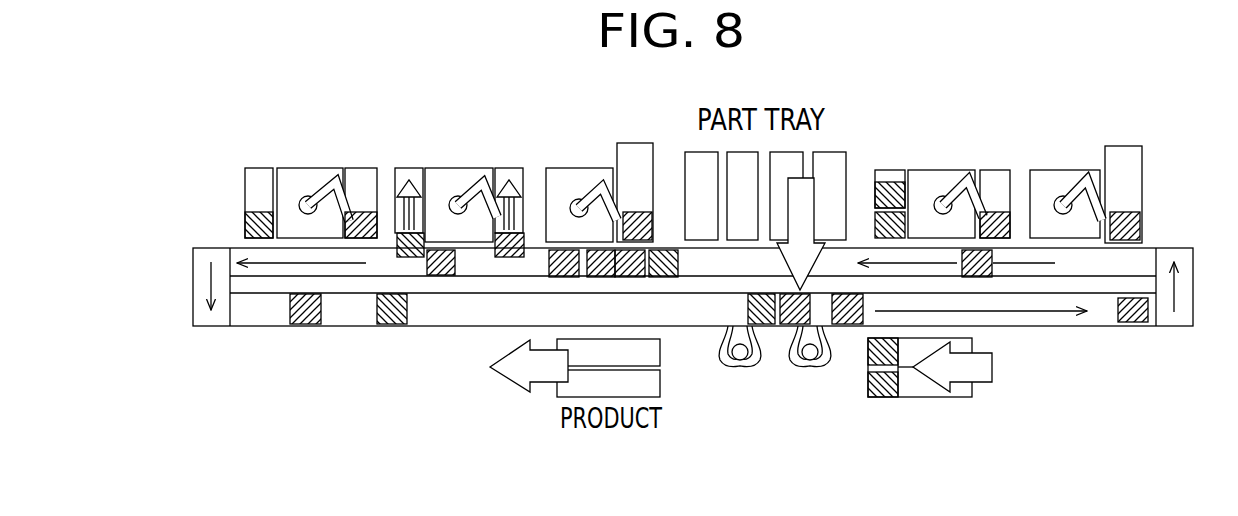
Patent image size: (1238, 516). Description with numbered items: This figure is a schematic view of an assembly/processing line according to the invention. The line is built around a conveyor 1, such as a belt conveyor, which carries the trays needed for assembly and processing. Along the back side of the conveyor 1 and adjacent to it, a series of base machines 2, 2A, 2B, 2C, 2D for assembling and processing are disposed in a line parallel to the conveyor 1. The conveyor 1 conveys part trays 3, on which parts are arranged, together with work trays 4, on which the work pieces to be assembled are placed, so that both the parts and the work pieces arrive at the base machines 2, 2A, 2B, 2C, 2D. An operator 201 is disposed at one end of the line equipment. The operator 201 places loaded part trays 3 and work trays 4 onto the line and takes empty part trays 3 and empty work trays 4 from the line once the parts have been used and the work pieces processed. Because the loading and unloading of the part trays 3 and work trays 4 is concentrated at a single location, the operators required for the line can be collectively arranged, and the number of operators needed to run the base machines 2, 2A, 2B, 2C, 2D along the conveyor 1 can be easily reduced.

The conveyor 1 is at (448, 333).
The base machine 2 is at (305, 188).
The base machine 2A is at (466, 163).
The base machine 2B is at (577, 163).
The base machine 2C is at (937, 167).
The base machine 2D is at (1062, 167).
The part tray 3 is at (247, 225).
The work tray 4 is at (356, 214).
The operator 201 is at (727, 360).